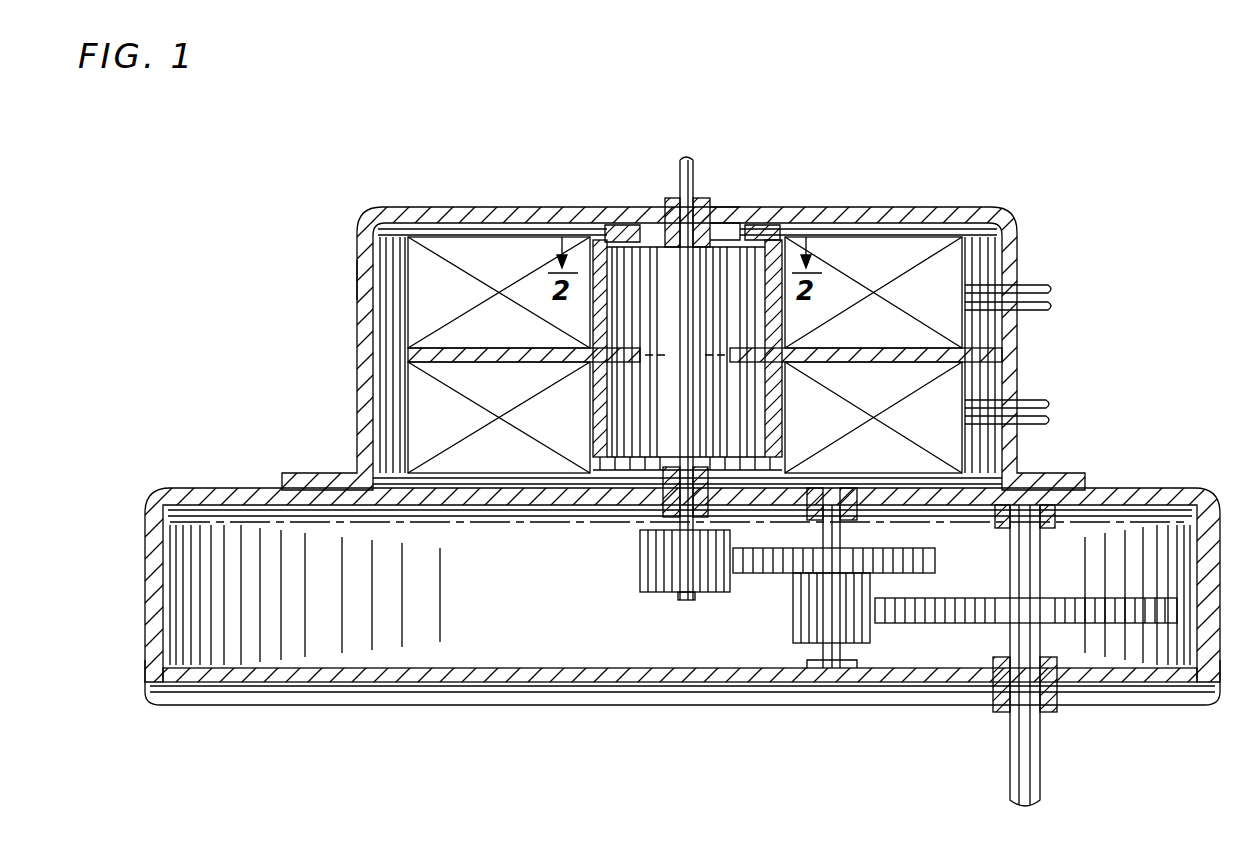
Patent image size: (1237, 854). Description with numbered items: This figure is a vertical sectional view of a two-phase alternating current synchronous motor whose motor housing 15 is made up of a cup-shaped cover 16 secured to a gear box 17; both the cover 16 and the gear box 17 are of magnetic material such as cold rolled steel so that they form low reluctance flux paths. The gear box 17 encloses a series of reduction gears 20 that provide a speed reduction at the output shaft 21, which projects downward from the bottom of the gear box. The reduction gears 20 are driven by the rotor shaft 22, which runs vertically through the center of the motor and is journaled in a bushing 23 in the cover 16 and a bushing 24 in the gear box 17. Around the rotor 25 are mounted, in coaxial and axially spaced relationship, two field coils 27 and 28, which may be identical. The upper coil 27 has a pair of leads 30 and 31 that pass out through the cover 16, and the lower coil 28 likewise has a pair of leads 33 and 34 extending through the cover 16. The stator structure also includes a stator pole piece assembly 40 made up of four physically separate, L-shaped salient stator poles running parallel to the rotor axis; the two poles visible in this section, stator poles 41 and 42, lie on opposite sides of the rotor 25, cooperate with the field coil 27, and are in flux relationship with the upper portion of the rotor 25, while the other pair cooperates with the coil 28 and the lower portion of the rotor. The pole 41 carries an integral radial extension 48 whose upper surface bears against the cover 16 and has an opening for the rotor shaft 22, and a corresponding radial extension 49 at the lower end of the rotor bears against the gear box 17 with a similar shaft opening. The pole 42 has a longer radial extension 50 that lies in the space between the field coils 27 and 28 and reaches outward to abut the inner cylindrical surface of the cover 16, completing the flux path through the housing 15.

The motor housing 15 is at (352, 281).
The cup-shaped cover 16 is at (453, 192).
The gear box 17 is at (157, 567).
The reduction gears 20 is at (793, 626).
The output shaft 21 is at (1040, 742).
The rotor shaft 22 is at (676, 601).
The bushing 23 is at (668, 207).
The bushing 24 is at (660, 515).
The rotor 25 is at (747, 250).
The field coil 27 is at (905, 243).
The field coil 28 is at (430, 402).
The lead 30 is at (1041, 287).
The lead 31 is at (1041, 312).
The lead 33 is at (1050, 398).
The lead 34 is at (1050, 424).
The stator pole piece assembly 40 is at (733, 218).
The salient stator pole 41 is at (598, 312).
The salient stator pole 42 is at (770, 316).
The radial extension 48 is at (642, 222).
The radial extension 49 is at (590, 470).
The radial extension 50 is at (1012, 367).